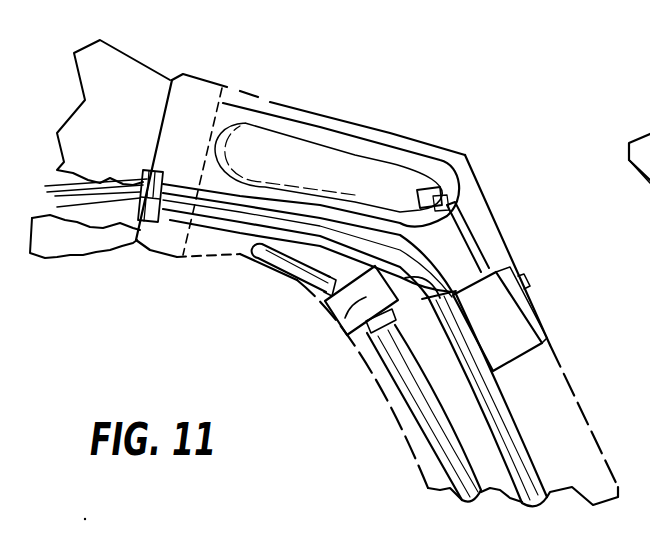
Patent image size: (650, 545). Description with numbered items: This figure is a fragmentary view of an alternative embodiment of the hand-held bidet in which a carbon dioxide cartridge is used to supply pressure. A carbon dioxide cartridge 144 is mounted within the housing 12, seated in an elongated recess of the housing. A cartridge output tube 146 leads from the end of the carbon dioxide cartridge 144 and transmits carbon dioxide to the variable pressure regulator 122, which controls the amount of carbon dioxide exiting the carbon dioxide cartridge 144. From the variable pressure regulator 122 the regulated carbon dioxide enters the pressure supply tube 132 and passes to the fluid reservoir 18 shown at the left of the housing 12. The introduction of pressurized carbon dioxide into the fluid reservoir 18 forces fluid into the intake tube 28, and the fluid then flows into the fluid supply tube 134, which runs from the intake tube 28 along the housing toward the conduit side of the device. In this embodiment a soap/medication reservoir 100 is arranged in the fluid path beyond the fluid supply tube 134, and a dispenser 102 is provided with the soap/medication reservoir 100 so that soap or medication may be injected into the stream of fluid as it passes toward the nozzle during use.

The housing 12 is at (240, 87).
The fluid reservoir 18 is at (117, 100).
The intake tube 28 is at (127, 203).
The soap/medication reservoir 100 is at (450, 440).
The dispenser 102 is at (343, 338).
The variable pressure regulator 122 is at (497, 330).
The pressure supply tube 132 is at (440, 268).
The fluid supply tube 134 is at (262, 250).
The carbon dioxide cartridge 144 is at (303, 163).
The cartridge output tube 146 is at (456, 228).